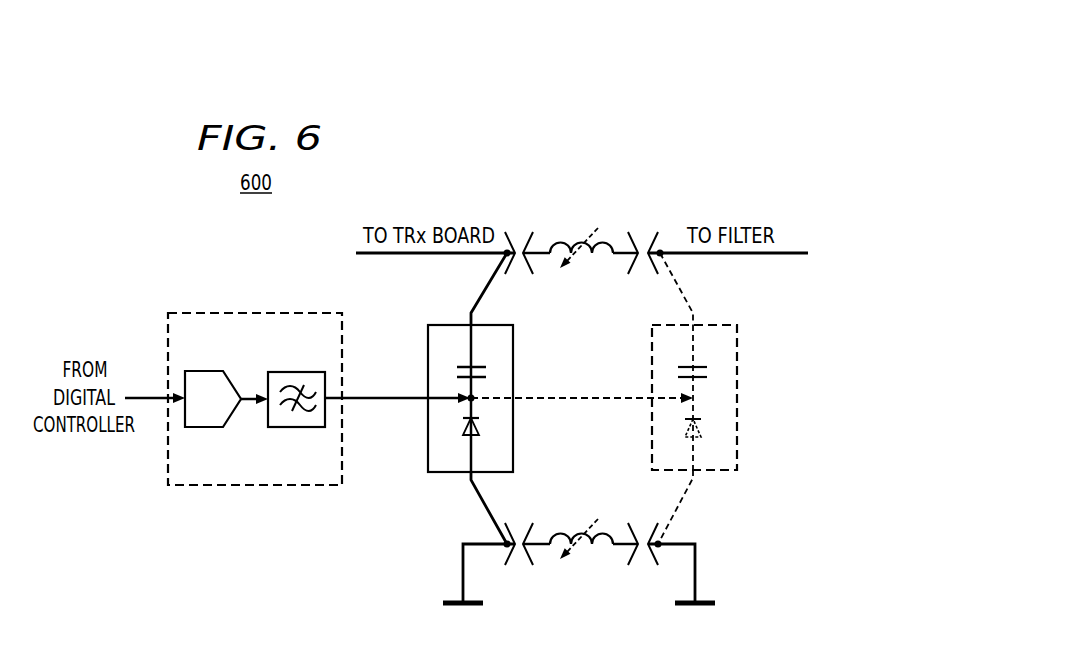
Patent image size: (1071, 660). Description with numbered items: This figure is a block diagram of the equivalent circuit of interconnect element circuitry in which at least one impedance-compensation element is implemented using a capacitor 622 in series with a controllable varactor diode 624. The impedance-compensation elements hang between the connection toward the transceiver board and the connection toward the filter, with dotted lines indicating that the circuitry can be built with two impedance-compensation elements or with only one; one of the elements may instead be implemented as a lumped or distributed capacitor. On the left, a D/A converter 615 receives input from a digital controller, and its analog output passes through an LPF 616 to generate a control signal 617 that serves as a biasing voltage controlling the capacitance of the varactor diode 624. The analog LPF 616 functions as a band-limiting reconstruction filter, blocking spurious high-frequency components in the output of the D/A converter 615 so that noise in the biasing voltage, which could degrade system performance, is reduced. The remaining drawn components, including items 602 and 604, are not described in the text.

The first directional coupler 602 is at (581, 251).
The second directional coupler 604 is at (581, 543).
The D/A converter 615 is at (208, 370).
The LPF 616 is at (298, 371).
The control signal 617 is at (393, 392).
The capacitor 622 is at (481, 359).
The varactor diode 624 is at (484, 442).